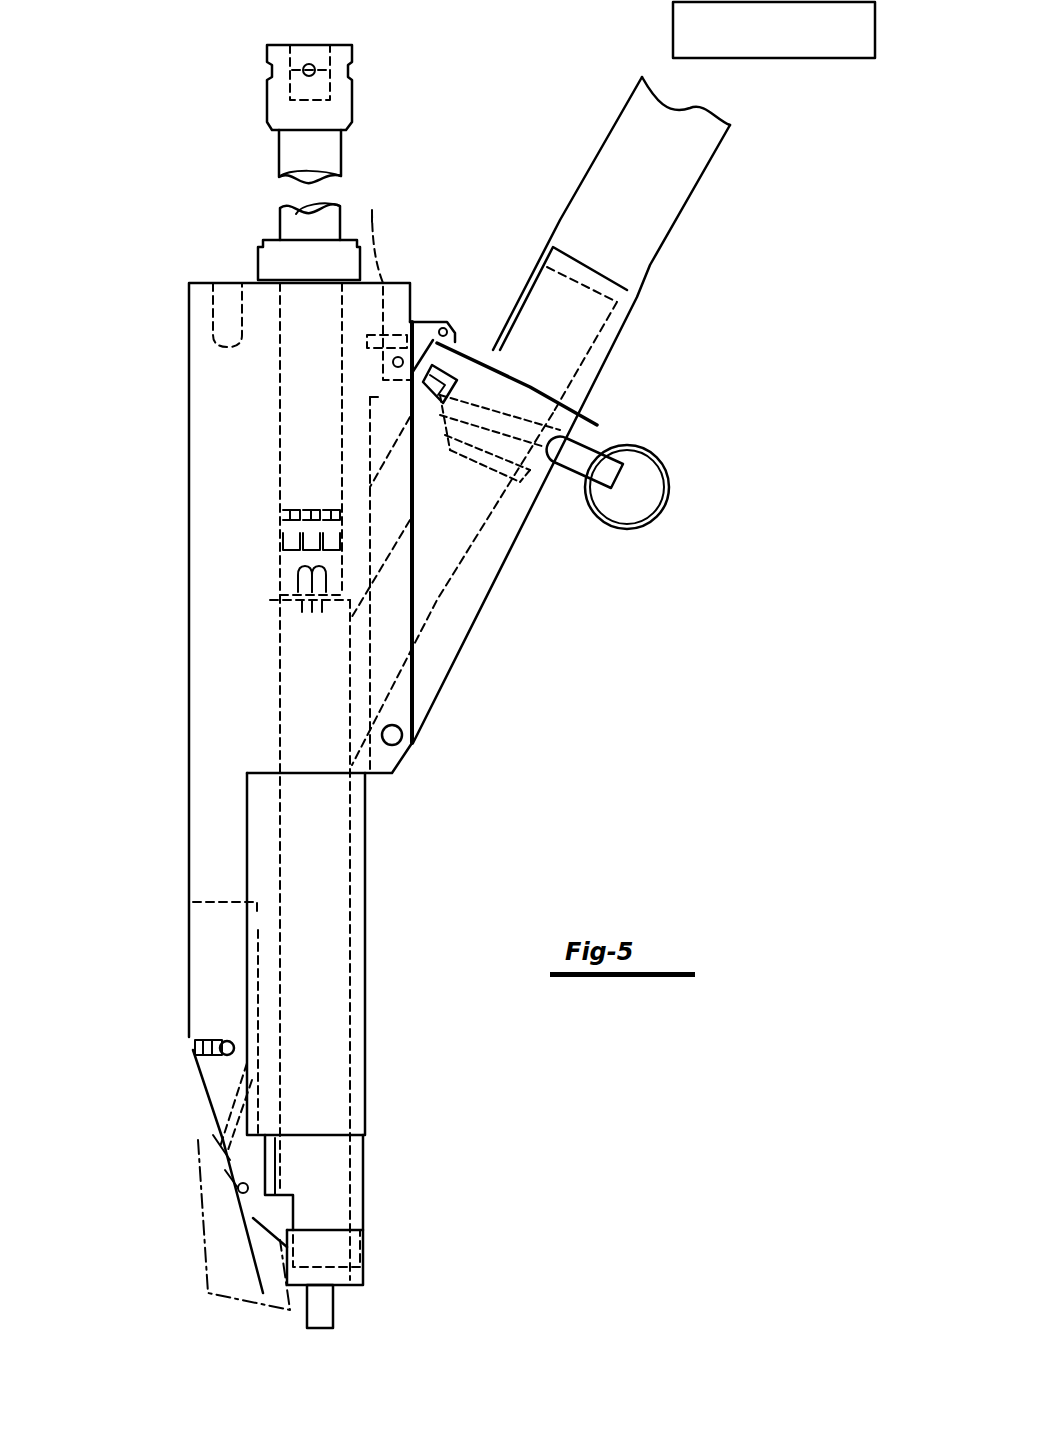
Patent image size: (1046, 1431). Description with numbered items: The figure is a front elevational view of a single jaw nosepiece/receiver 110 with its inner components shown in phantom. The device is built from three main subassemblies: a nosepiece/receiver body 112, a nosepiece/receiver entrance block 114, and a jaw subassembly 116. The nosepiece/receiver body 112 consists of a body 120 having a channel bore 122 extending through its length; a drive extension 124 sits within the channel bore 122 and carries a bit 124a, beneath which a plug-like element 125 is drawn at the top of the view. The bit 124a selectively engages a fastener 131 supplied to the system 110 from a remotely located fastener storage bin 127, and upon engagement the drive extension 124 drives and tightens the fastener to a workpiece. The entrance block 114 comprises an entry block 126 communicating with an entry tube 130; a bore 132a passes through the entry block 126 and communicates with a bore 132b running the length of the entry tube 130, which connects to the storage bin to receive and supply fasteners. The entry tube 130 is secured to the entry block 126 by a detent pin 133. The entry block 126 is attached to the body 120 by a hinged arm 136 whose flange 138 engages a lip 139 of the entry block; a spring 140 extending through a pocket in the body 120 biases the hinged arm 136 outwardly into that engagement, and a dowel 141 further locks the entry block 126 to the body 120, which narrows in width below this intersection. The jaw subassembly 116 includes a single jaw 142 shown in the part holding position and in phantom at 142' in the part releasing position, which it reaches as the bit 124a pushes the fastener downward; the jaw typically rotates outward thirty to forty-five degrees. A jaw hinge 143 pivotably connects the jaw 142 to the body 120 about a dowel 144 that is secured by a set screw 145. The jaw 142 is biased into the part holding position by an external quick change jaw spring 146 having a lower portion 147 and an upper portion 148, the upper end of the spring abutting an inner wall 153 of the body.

The single jaw nosepiece/receiver 110 is at (135, 318).
The nosepiece/receiver body 112 is at (162, 770).
The nosepiece/receiver entrance block 114 is at (525, 570).
The jaw subassembly 116 is at (183, 1163).
The body 120 is at (217, 843).
The channel bore 122 is at (320, 910).
The drive extension 124 is at (290, 227).
The bit 124a is at (300, 582).
The plug 125 is at (283, 110).
The entry block 126 is at (518, 520).
The fastener storage bin 127 is at (750, 58).
The entry tube 130 is at (677, 300).
The fastener 131 is at (320, 1303).
The bore 132a is at (445, 560).
The bore 132b is at (570, 353).
The detent pin 133 is at (643, 527).
The hinged arm 136 is at (418, 322).
The flange 138 is at (452, 343).
The lip 139 is at (490, 363).
The spring 140 is at (395, 206).
The dowel 141 is at (403, 743).
The jaw 142 is at (244, 1240).
The jaw in part releasing position 142' is at (213, 1237).
The jaw hinge 143 is at (217, 1080).
The dowel 144 is at (228, 1043).
The set screw 145 is at (197, 1052).
The external quick change jaw spring 146 is at (227, 1180).
The lower portion 147 is at (227, 1187).
The upper portion 148 is at (217, 1147).
The inner wall 153 is at (250, 1067).